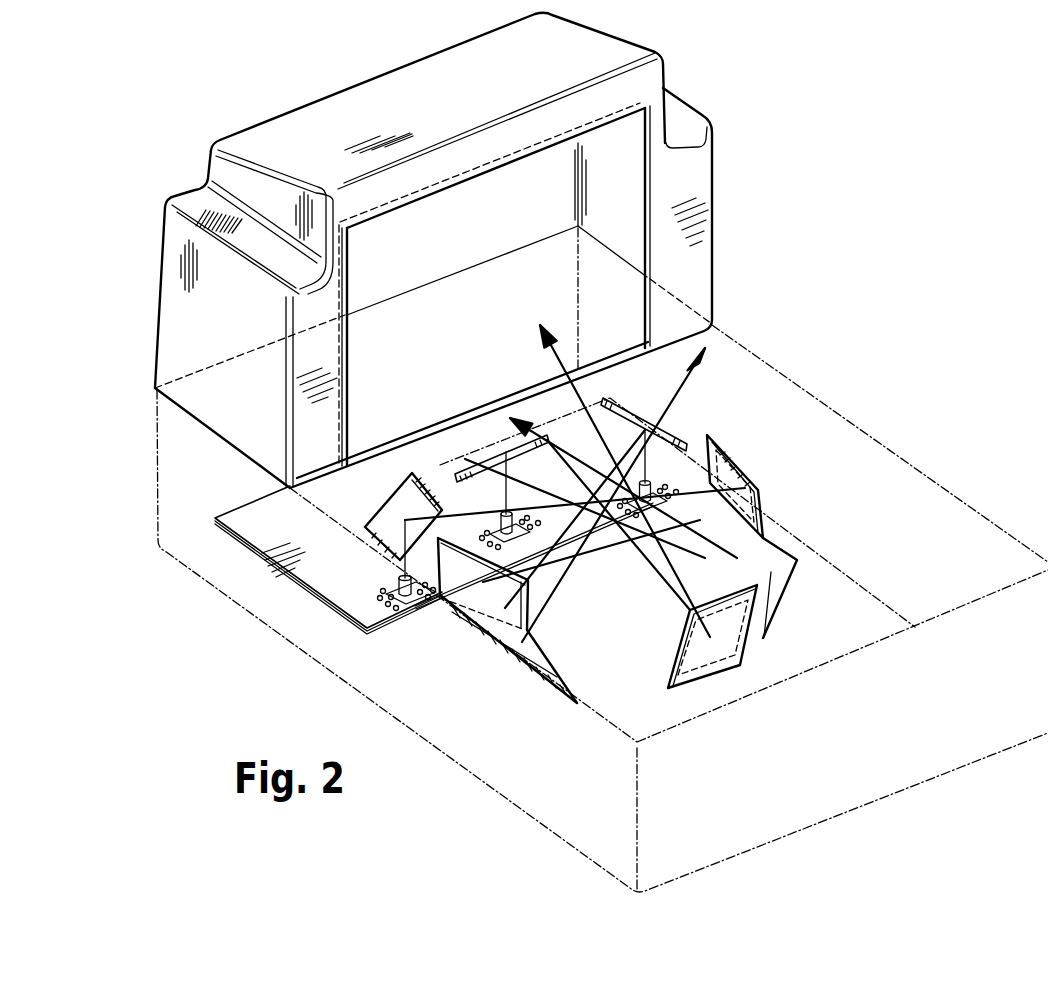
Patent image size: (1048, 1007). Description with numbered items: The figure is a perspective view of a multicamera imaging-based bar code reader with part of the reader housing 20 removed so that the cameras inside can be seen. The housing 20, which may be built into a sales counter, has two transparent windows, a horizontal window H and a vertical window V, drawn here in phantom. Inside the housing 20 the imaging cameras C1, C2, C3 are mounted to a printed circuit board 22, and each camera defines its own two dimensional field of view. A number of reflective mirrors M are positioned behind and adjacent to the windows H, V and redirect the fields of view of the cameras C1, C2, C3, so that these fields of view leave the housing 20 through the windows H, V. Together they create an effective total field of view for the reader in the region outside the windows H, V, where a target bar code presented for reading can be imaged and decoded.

The housing 20 is at (675, 205).
The transparent window V is at (615, 178).
The printed circuit board 22 is at (343, 580).
The imaging camera C1 is at (405, 597).
The imaging camera C2 is at (497, 515).
The imaging camera C3 is at (643, 475).
The reflective mirror M is at (497, 452).
The transparent window H is at (760, 515).